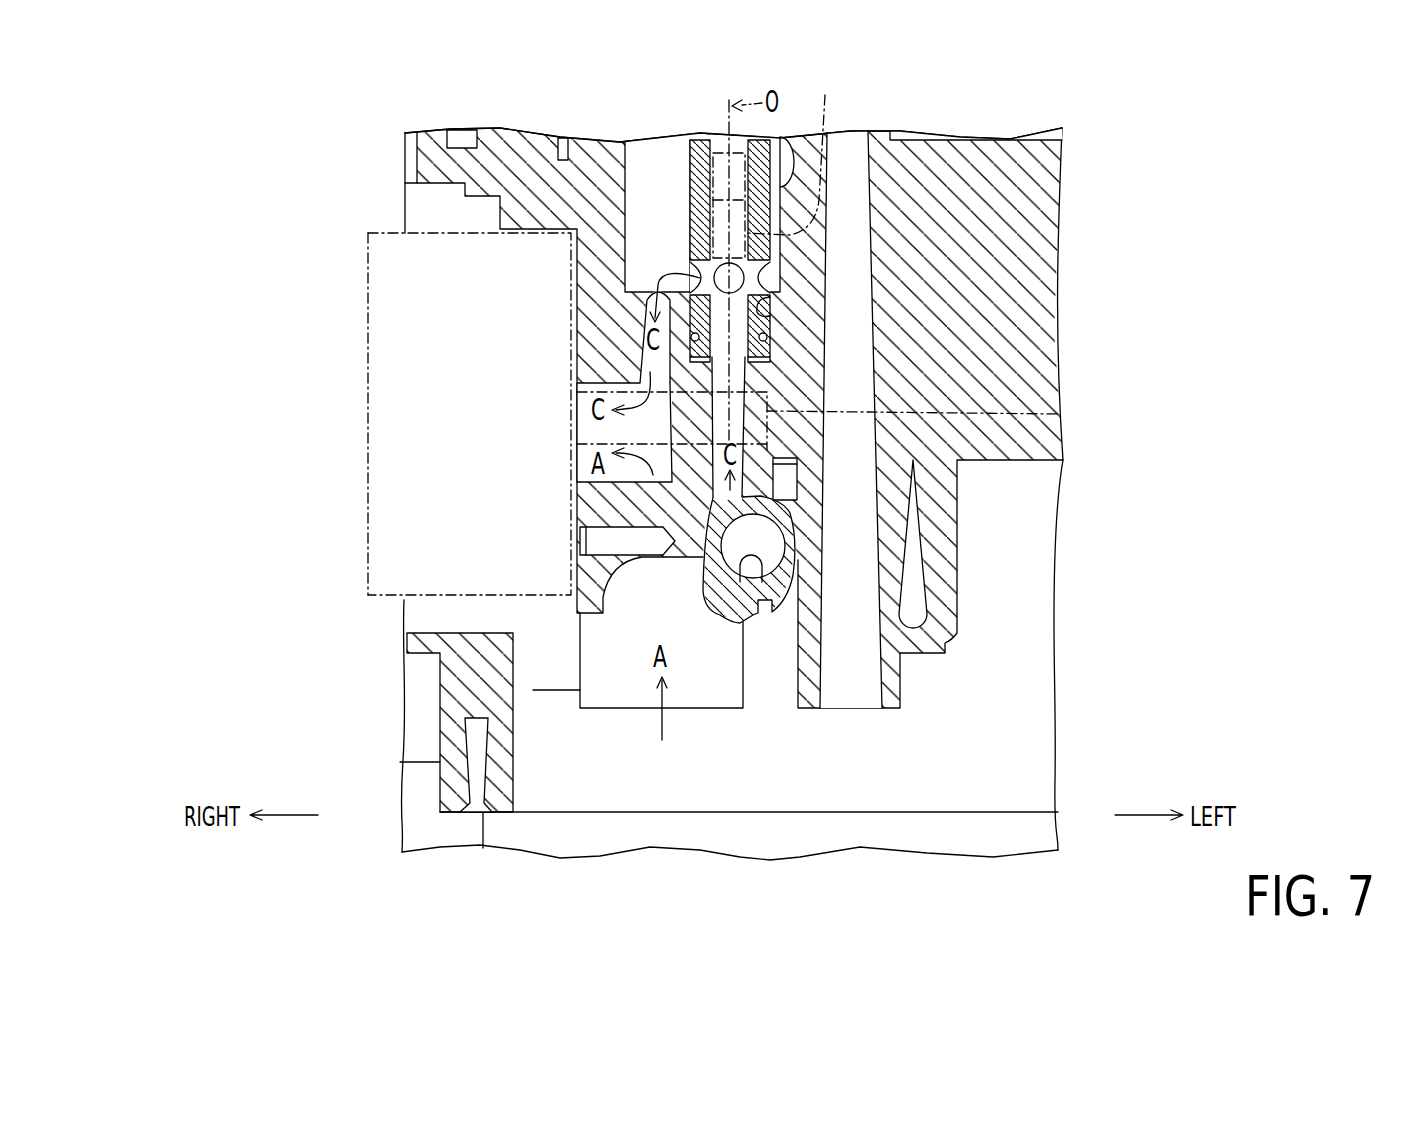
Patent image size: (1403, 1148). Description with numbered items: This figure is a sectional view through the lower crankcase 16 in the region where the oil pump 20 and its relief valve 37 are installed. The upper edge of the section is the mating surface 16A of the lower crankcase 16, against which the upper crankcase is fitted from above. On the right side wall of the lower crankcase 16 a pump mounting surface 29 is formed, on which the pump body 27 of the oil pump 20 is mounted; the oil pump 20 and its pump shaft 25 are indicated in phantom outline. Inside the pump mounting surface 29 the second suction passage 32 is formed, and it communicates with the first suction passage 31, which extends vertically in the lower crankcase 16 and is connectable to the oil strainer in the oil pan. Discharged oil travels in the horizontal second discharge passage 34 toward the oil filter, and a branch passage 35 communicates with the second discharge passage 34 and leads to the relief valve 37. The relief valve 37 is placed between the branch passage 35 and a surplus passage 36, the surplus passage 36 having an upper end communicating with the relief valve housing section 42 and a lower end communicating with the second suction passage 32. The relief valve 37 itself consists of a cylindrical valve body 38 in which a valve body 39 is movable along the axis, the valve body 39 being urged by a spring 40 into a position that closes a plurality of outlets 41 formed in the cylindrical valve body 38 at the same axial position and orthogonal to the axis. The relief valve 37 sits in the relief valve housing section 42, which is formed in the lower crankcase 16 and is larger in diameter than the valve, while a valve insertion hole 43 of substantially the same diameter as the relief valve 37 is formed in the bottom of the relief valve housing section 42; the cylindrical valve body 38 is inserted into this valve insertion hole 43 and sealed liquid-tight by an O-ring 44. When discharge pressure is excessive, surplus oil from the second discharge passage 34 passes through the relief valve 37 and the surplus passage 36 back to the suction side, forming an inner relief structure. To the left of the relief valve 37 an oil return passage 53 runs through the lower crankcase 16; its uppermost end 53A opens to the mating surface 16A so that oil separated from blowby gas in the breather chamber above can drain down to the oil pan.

The lower crankcase 16 is at (1075, 170).
The mating surface 16A is at (533, 130).
The oil pump 20 is at (360, 336).
The pump shaft 25 is at (1060, 414).
The pump body 27 is at (368, 447).
The pump mounting surface 29 is at (573, 350).
The first suction passage 31 is at (627, 687).
The second suction passage 32 is at (672, 433).
The second discharge passage 34 is at (768, 617).
The branch passage 35 is at (717, 620).
The surplus passage 36 is at (575, 370).
The relief valve 37 is at (688, 178).
The cylindrical valve body 38 is at (793, 183).
The valve body 39 is at (792, 148).
The spring 40 is at (722, 153).
The outlets 41 is at (745, 268).
The relief valve housing section 42 is at (627, 180).
The valve insertion hole 43 is at (770, 315).
The O-ring 44 is at (770, 337).
The oil return passage 53 is at (877, 466).
The uppermost end 53A is at (852, 140).